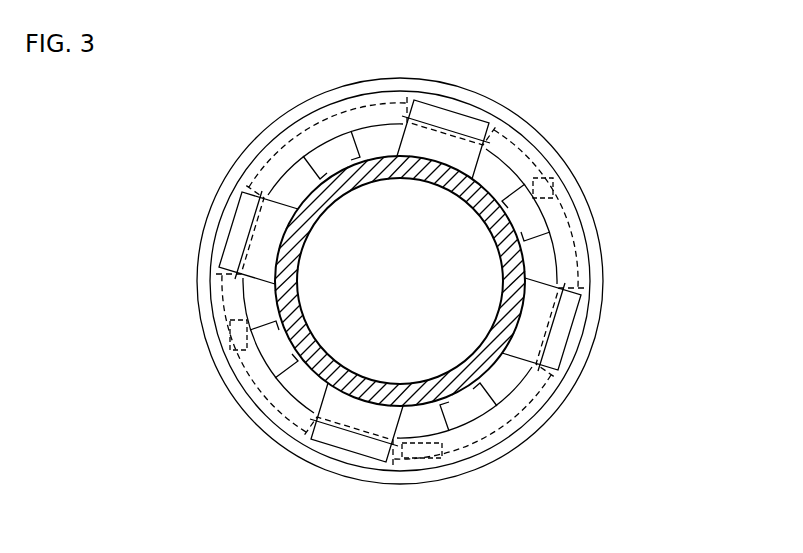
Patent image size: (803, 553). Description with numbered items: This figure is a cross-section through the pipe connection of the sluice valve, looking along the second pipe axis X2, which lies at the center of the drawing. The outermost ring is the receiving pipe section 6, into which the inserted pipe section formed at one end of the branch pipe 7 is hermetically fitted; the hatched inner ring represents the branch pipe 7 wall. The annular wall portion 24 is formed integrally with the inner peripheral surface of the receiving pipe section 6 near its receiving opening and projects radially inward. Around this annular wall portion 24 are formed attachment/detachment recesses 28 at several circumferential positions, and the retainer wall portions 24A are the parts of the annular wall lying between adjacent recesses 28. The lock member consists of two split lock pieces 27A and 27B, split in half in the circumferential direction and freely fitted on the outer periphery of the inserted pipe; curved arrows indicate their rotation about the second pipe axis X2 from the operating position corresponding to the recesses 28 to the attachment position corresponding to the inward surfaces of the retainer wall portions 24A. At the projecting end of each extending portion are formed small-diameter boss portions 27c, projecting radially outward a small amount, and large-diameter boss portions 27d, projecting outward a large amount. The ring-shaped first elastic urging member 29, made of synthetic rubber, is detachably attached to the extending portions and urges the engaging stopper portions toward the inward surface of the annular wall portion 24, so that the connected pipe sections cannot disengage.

The receiving pipe section 6 is at (203, 232).
The branch pipe 7 is at (399, 385).
The annular wall portion 24 is at (243, 166).
The retainer wall portions 24A is at (500, 142).
The split lock piece 27A is at (499, 387).
The split lock piece 27B is at (284, 351).
The small-diameter boss portions 27c is at (352, 140).
The large-diameter boss portions 27d is at (448, 117).
The attachment/detachment recesses 28 is at (553, 178).
The first elastic urging member 29 is at (573, 218).
The second pipe axis X2 is at (400, 281).